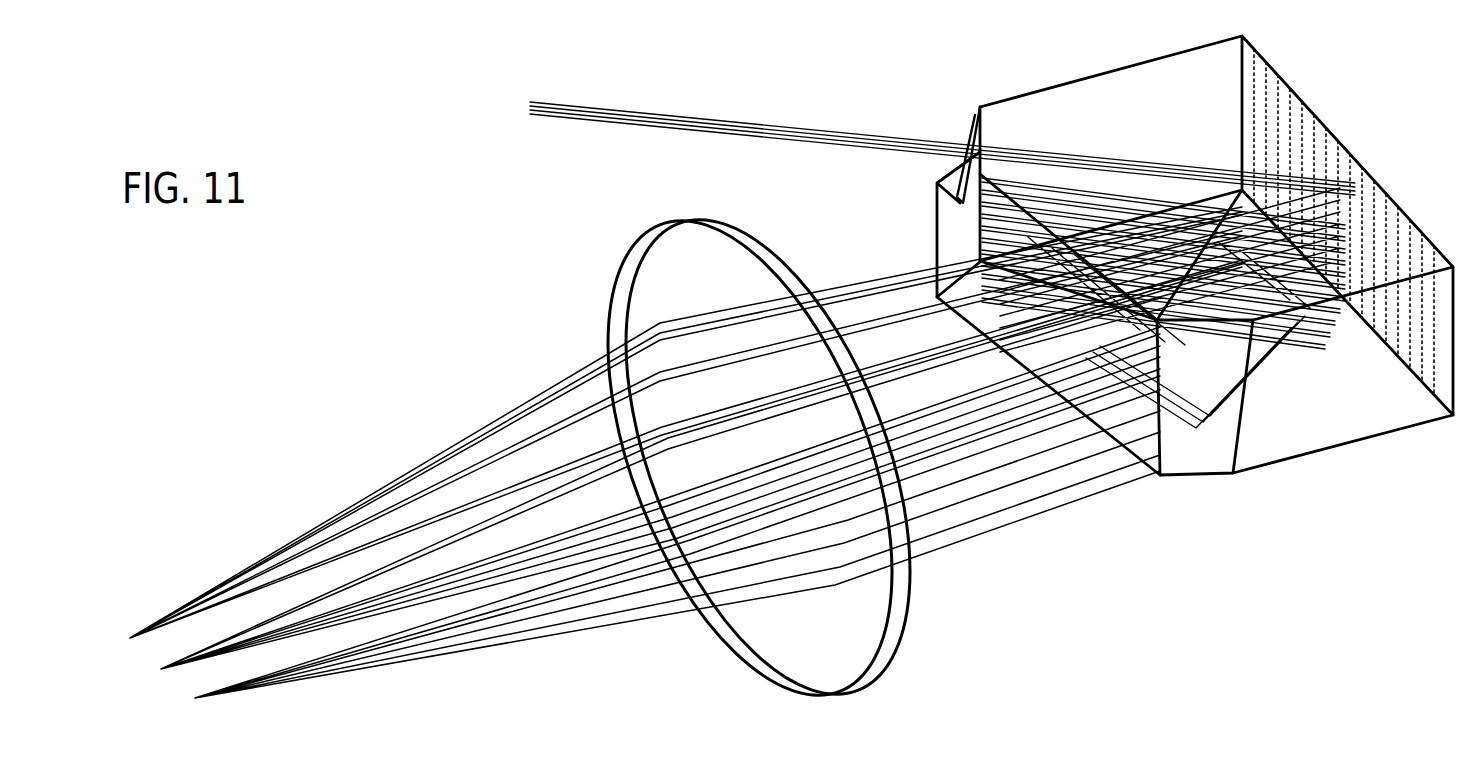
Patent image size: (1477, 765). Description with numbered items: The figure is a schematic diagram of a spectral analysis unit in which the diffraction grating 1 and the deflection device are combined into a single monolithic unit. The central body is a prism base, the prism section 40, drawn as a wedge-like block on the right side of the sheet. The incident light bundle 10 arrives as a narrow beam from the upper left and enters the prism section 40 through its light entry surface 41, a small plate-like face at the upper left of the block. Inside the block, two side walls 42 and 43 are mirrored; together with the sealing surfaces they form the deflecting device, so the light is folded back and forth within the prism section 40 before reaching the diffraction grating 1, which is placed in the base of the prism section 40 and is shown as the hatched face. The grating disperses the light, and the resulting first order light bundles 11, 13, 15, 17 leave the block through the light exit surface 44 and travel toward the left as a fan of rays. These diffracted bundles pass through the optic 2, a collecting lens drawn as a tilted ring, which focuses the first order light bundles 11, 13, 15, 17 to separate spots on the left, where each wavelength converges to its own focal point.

The diffraction grating 1 is at (1297, 105).
The optic 2 is at (759, 457).
The incident light bundle 10 is at (917, 145).
The first order light bundle 11 is at (686, 422).
The first order light bundle 13 is at (701, 468).
The first order light bundle 15 is at (677, 537).
The first order light bundle 17 is at (832, 335).
The prism section 40 is at (1305, 380).
The light entry surface 41 is at (962, 150).
The side wall 42 is at (1200, 445).
The side wall 43 is at (953, 238).
The light exit surface 44 is at (1133, 437).